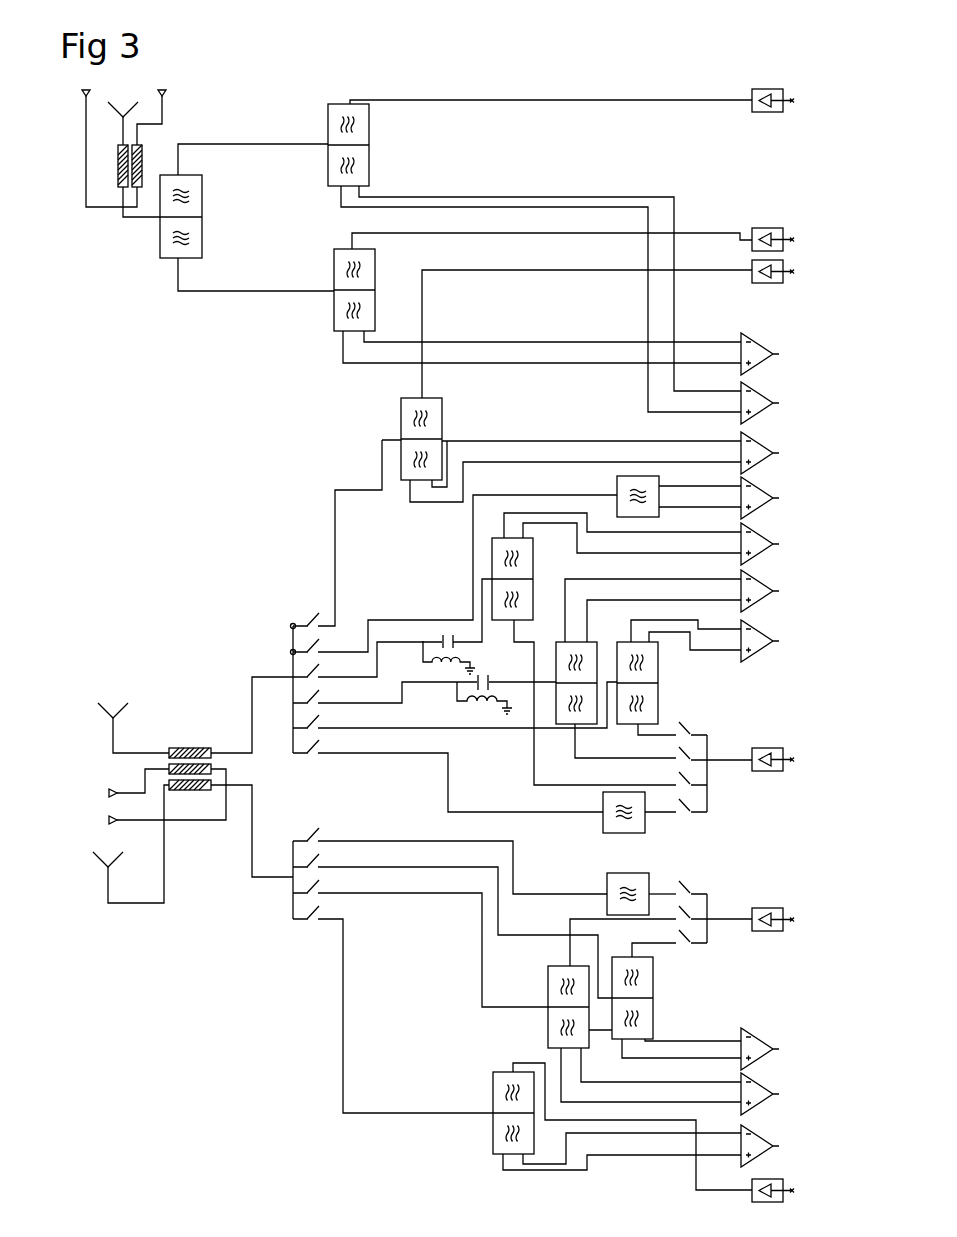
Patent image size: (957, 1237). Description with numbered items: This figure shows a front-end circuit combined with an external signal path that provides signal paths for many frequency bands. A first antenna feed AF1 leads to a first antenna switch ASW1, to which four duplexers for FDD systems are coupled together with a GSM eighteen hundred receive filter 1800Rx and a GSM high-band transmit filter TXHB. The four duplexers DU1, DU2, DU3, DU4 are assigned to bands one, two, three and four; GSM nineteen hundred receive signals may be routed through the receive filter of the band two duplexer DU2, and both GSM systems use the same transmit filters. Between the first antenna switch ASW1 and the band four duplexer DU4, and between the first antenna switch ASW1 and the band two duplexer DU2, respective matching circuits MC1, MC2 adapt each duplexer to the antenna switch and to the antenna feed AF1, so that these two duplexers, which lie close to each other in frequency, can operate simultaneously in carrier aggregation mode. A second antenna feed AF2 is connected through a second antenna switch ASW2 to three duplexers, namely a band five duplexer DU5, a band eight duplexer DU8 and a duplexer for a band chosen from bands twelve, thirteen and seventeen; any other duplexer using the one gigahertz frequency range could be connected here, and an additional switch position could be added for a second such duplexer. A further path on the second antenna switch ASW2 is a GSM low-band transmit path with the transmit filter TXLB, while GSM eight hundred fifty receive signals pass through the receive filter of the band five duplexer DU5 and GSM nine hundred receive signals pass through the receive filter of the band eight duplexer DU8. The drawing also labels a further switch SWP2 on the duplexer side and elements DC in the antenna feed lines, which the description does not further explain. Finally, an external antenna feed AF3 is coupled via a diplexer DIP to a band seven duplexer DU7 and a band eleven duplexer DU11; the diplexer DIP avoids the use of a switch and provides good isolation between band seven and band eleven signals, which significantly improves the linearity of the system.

The external antenna feed AF3 is at (109, 170).
The DC block DC is at (163, 83).
The diplexer DIP is at (160, 258).
The band 7 duplexer DU7 is at (326, 125).
The band 11 duplexer DU11 is at (333, 322).
The band 3 duplexer DU3 is at (401, 413).
The Rx filter for GSM 1800 1800Rx is at (620, 476).
The band 4 duplexer DU4 is at (492, 545).
The matching circuit MC1 is at (447, 634).
The matching circuit MC2 is at (458, 712).
The band 2 duplexer DU2 is at (557, 708).
The band 1 duplexer DU1 is at (662, 688).
The Tx filter for GSM high-band TXHB is at (650, 828).
The second switch SWP2 is at (710, 782).
The first antenna switch ASW1 is at (290, 640).
The first antenna feed AF1 is at (159, 751).
The second antenna feed AF2 is at (127, 862).
The second antenna switch ASW2 is at (294, 892).
The Tx filter for GSM low-band TXLB is at (652, 882).
The band 5 duplexer DU5 is at (553, 973).
The band 8 duplexer DU8 is at (548, 1030).